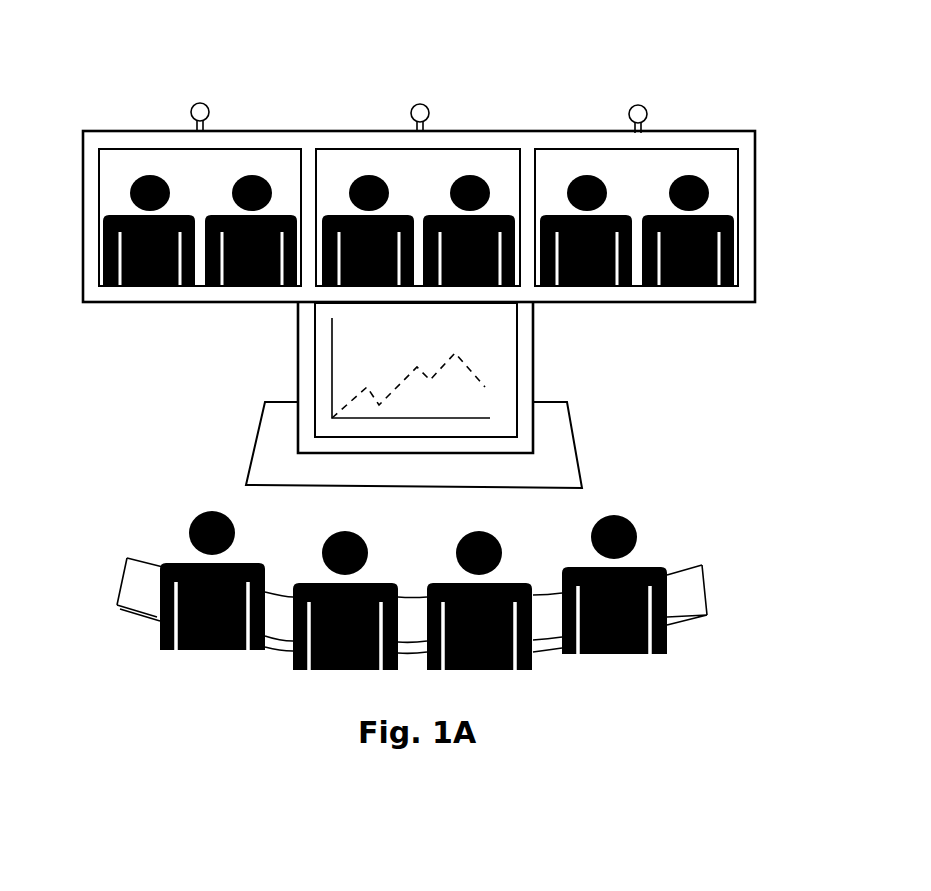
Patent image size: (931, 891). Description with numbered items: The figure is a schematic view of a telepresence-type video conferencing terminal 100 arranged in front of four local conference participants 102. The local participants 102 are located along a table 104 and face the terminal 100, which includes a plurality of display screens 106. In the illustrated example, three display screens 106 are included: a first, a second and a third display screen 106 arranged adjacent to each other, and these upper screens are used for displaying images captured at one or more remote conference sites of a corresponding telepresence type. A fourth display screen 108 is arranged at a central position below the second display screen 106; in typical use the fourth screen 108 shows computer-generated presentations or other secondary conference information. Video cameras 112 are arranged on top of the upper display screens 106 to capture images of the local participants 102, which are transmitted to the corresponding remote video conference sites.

The video conferencing terminal 100 is at (406, 272).
The local conference participants 102 is at (188, 528).
The table 104 is at (692, 598).
The display screens 106 is at (133, 162).
The fourth display screen 108 is at (325, 369).
The video cameras 112 is at (411, 110).